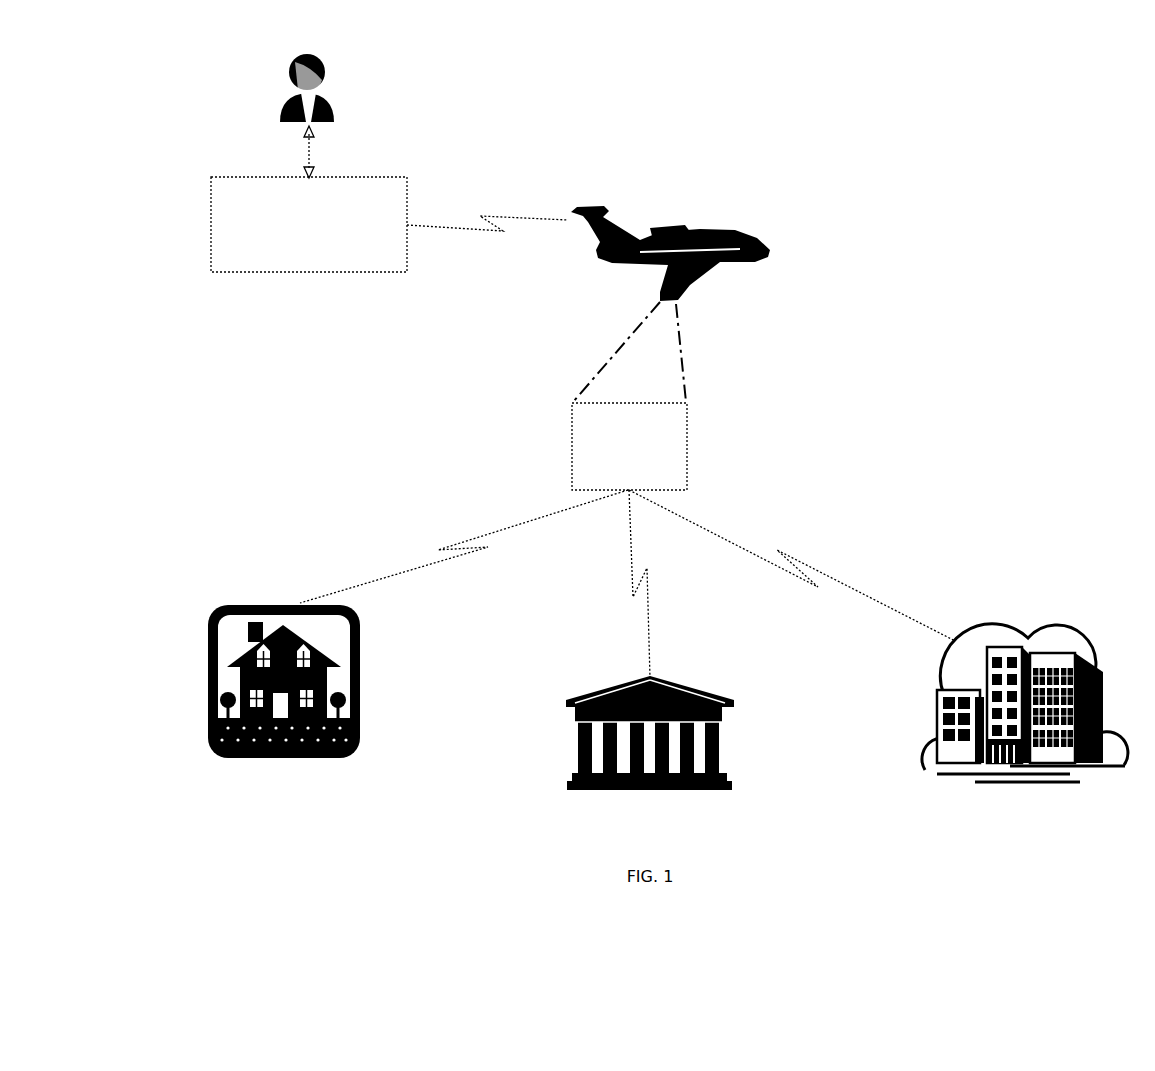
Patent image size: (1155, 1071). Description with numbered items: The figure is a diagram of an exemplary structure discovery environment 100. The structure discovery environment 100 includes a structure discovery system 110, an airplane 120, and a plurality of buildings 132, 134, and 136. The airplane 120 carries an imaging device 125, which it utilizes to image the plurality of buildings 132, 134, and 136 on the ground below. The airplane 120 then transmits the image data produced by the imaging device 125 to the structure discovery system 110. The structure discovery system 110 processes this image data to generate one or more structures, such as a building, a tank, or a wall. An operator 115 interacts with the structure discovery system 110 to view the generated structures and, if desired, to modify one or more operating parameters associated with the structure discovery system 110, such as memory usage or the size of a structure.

The structure discovery environment 100 is at (1030, 26).
The structure discovery system 110 is at (295, 256).
The operator 115 is at (283, 100).
The airplane 120 is at (748, 232).
The imaging device 125 is at (615, 479).
The building 132 is at (298, 758).
The building 134 is at (577, 742).
The building 136 is at (1005, 785).